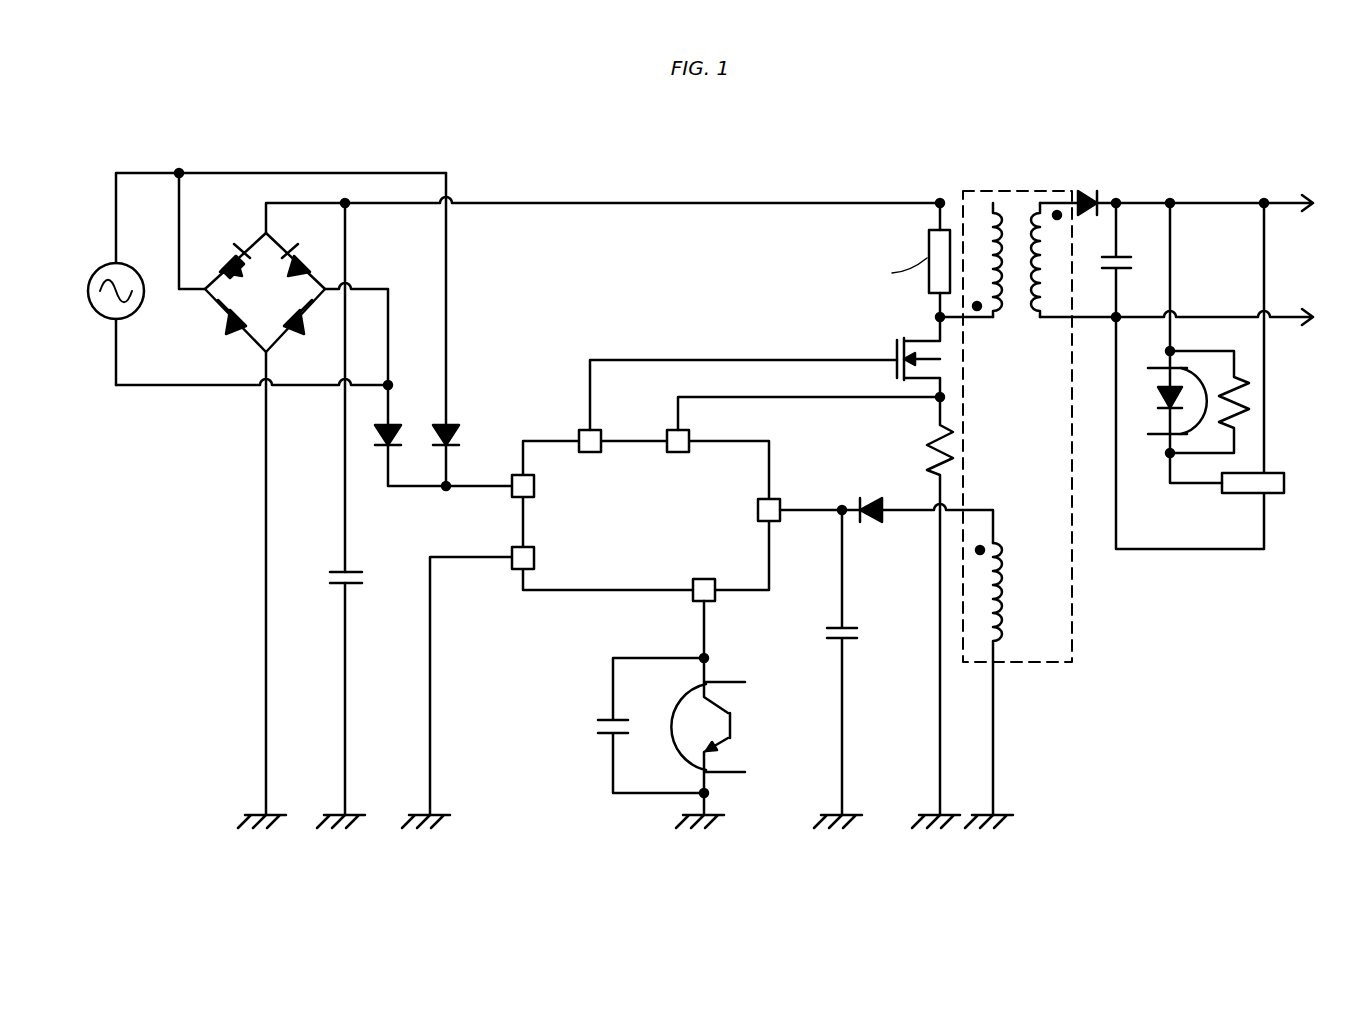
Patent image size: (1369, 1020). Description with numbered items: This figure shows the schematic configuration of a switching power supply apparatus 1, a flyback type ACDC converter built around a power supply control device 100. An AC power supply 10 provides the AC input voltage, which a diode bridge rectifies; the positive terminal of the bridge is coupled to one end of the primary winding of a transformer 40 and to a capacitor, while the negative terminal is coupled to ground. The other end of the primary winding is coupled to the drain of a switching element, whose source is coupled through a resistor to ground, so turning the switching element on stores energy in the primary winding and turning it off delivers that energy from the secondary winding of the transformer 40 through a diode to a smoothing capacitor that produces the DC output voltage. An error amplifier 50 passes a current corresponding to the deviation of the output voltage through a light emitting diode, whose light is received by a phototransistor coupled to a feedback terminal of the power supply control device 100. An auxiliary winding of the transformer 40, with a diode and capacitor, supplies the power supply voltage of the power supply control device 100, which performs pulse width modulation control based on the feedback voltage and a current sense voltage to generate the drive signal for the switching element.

The switching power supply apparatus 1 is at (188, 144).
The AC power supply 10 is at (97, 268).
The transformer 40 is at (993, 191).
The error amplifier 50 is at (1232, 500).
The power supply control device 100 is at (524, 439).